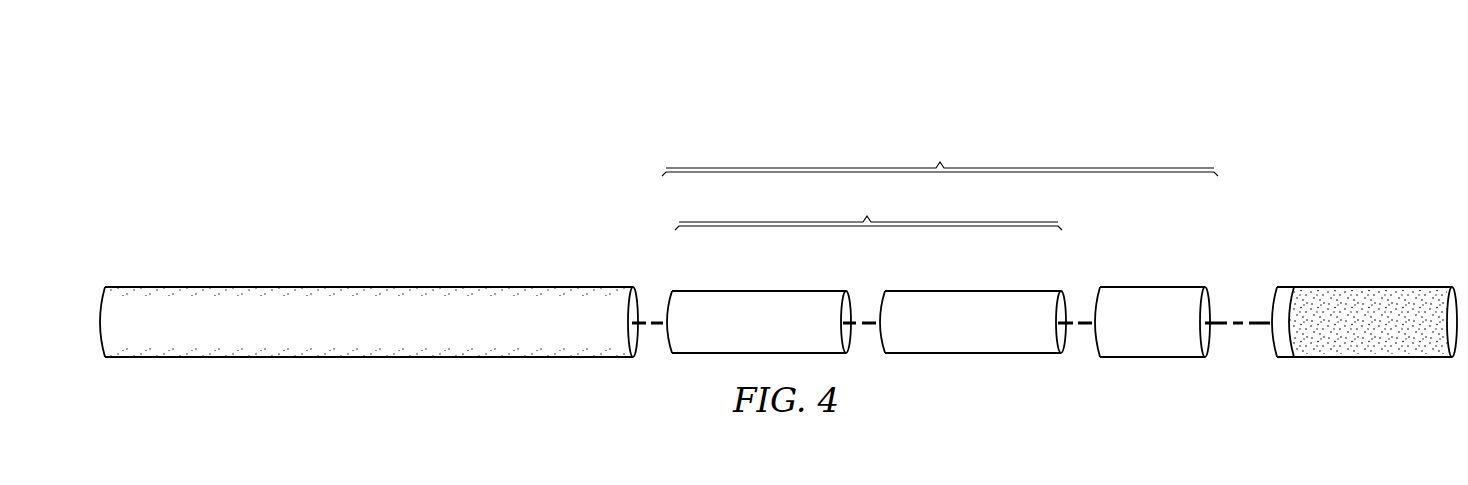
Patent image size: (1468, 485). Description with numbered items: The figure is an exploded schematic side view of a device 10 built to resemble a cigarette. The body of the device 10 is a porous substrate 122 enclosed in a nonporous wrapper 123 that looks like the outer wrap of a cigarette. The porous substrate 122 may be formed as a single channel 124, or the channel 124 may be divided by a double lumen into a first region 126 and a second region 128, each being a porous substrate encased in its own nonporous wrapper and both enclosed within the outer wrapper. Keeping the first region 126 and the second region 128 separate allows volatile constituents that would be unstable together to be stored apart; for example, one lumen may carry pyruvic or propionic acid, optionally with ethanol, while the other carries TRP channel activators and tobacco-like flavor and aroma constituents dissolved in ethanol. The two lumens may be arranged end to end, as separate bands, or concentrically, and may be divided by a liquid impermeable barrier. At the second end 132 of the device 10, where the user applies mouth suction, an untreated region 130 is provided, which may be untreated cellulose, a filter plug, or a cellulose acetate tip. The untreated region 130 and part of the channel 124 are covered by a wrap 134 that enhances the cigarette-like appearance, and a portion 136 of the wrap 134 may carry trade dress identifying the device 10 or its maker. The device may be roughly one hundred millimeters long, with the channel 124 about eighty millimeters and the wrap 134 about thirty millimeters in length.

The device 10 is at (1108, 106).
The porous substrate 122 is at (940, 156).
The channel 124 is at (868, 209).
The nonporous wrapper 123 is at (318, 287).
The first region 126 is at (745, 291).
The second region 128 is at (969, 291).
The untreated region 130 is at (1154, 287).
The second end 132 is at (1211, 345).
The wrap 134 is at (1373, 287).
The portion of the wrap 136 is at (1289, 287).